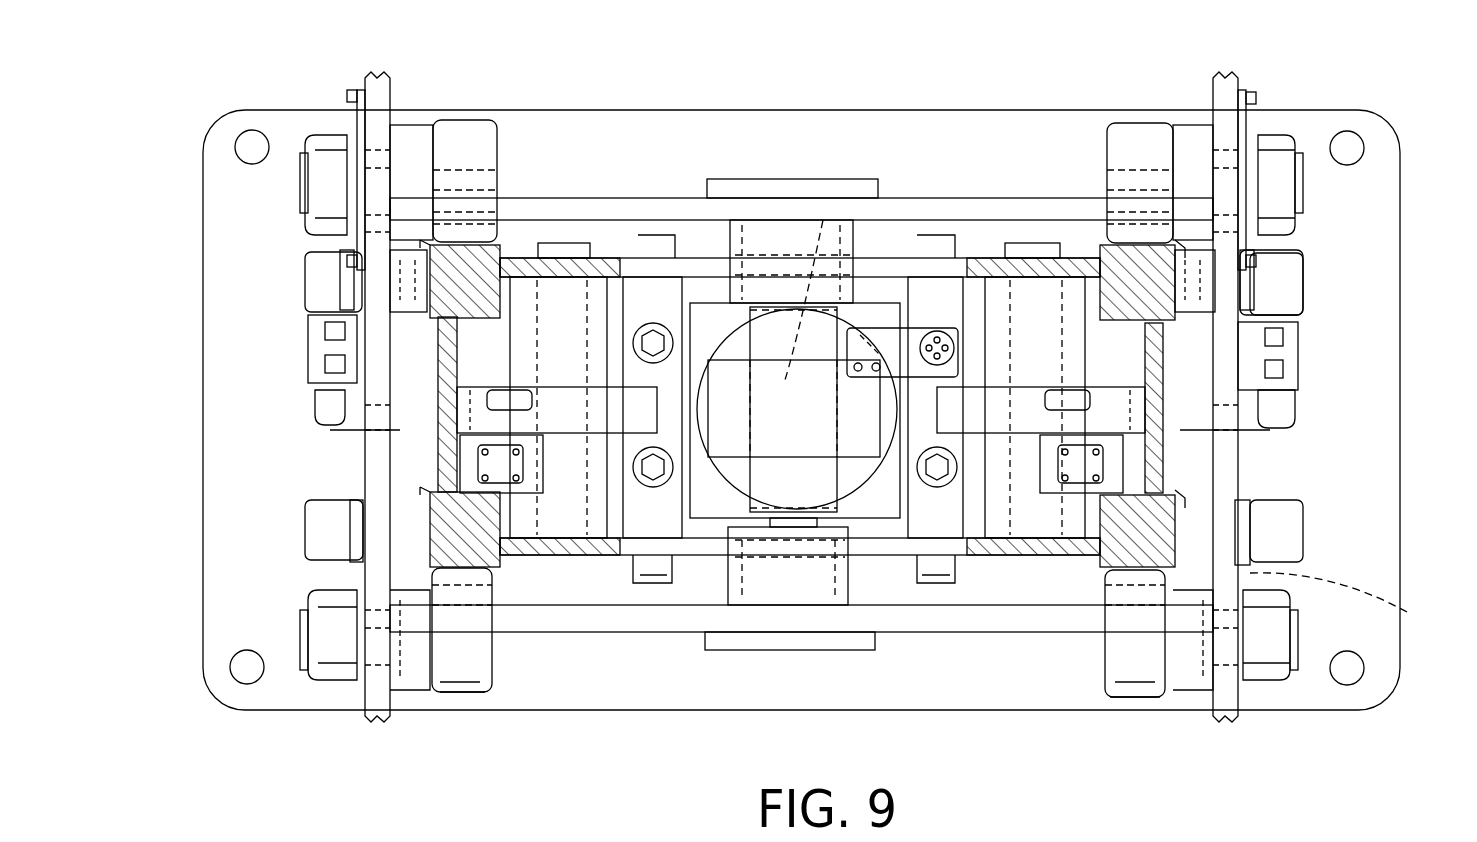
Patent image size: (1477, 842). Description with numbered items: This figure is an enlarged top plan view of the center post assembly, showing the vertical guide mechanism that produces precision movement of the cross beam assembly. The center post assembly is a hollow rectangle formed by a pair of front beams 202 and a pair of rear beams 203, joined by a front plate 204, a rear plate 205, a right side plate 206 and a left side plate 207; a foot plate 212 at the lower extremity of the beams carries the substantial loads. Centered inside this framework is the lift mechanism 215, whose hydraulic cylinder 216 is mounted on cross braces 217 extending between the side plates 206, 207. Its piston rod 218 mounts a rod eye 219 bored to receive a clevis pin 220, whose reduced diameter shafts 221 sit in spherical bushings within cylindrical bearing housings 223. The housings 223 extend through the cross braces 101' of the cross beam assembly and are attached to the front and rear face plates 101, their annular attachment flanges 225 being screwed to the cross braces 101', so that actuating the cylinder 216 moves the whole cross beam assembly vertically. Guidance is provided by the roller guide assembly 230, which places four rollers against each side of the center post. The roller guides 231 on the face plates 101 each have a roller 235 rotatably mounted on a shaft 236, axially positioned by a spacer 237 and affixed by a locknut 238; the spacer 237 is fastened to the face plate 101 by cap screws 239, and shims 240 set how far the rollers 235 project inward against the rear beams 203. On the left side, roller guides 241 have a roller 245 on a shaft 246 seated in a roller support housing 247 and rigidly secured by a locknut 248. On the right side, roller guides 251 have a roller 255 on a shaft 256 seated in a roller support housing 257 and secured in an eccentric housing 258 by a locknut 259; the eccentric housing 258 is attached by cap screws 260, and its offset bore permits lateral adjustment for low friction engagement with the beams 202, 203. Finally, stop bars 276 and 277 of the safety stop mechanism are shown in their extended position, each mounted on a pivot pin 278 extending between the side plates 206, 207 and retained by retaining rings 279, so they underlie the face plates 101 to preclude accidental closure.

The face plate 101 is at (848, 378).
The cross brace 101' is at (801, 429).
The front beam 202 is at (1052, 290).
The rear beam 203 is at (500, 245).
The front plate 204 is at (1263, 443).
The rear plate 205 is at (445, 440).
The side plate 206 is at (610, 262).
The left side plate 207 is at (617, 583).
The foot plate 212 is at (1365, 215).
The lift mechanism 215 is at (740, 300).
The hydraulic cylinder 216 is at (770, 290).
The cross brace 217 is at (662, 290).
The piston rod 218 is at (718, 318).
The rod eye 219 is at (700, 555).
The clevis pin 220 is at (807, 607).
The shaft 221 is at (823, 220).
The bearing housing 223 is at (867, 233).
The attachment flange 225 is at (853, 240).
The roller guide assembly 230 is at (1323, 283).
The roller guide 231 is at (310, 297).
The roller 235 is at (290, 258).
The shaft 236 is at (446, 418).
The spacer 237 is at (312, 365).
The locknut 238 is at (323, 407).
The cap screw 239 is at (318, 350).
The shim 240 is at (335, 325).
The roller guide 241 is at (463, 700).
The roller 245 is at (410, 673).
The shaft 246 is at (310, 620).
The roller support housing 247 is at (410, 677).
The locknut 248 is at (323, 680).
The roller guide 251 is at (483, 108).
The roller 255 is at (485, 137).
The shaft 256 is at (318, 160).
The roller support housing 257 is at (413, 137).
The eccentric housing 258 is at (360, 95).
The locknut 259 is at (335, 135).
The cap screw 260 is at (352, 92).
The stop bar 276 is at (1030, 400).
The stop bar 277 is at (650, 427).
The pivot pin 278 is at (525, 300).
The retaining ring 279 is at (1003, 256).